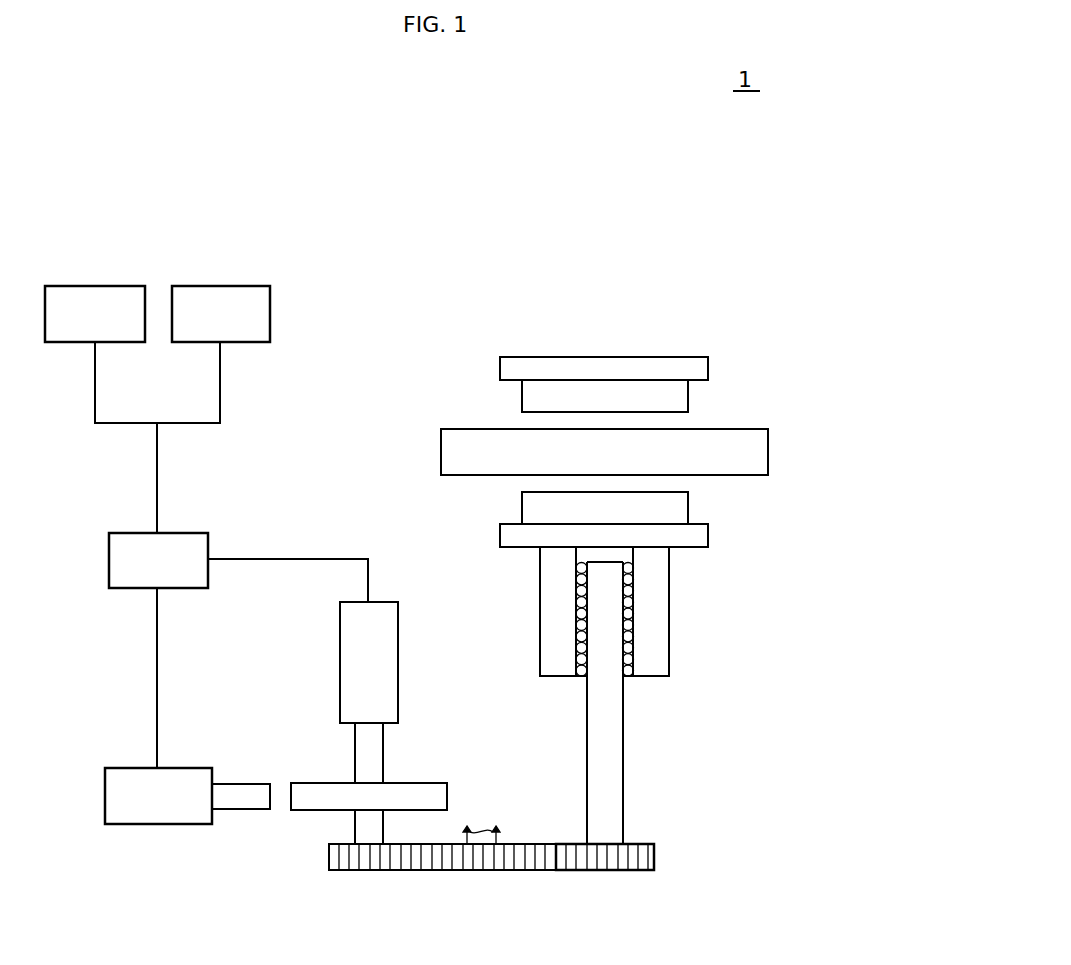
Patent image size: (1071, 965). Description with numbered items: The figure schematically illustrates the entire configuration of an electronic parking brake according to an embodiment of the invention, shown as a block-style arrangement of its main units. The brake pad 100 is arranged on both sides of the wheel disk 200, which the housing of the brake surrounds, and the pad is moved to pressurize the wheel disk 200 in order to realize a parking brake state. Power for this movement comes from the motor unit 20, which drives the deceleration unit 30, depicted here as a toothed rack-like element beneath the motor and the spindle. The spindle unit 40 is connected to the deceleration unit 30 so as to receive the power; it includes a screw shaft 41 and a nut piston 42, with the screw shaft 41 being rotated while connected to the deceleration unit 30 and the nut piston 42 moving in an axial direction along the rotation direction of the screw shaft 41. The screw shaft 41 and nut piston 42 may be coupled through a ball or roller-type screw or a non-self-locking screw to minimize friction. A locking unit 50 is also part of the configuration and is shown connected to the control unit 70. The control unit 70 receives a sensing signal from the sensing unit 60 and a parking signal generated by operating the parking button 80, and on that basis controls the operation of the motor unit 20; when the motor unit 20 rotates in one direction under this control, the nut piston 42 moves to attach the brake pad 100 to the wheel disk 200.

The motor unit 20 is at (340, 663).
The deceleration unit 30 is at (512, 870).
The spindle unit 40 is at (681, 696).
The screw shaft 41 is at (605, 698).
The nut piston 42 is at (669, 626).
The locking unit 50 is at (133, 768).
The sensing unit 60 is at (221, 286).
The control unit 70 is at (129, 533).
The parking button 80 is at (96, 286).
The brake pad 100 is at (690, 395).
The wheel disk 200 is at (441, 450).